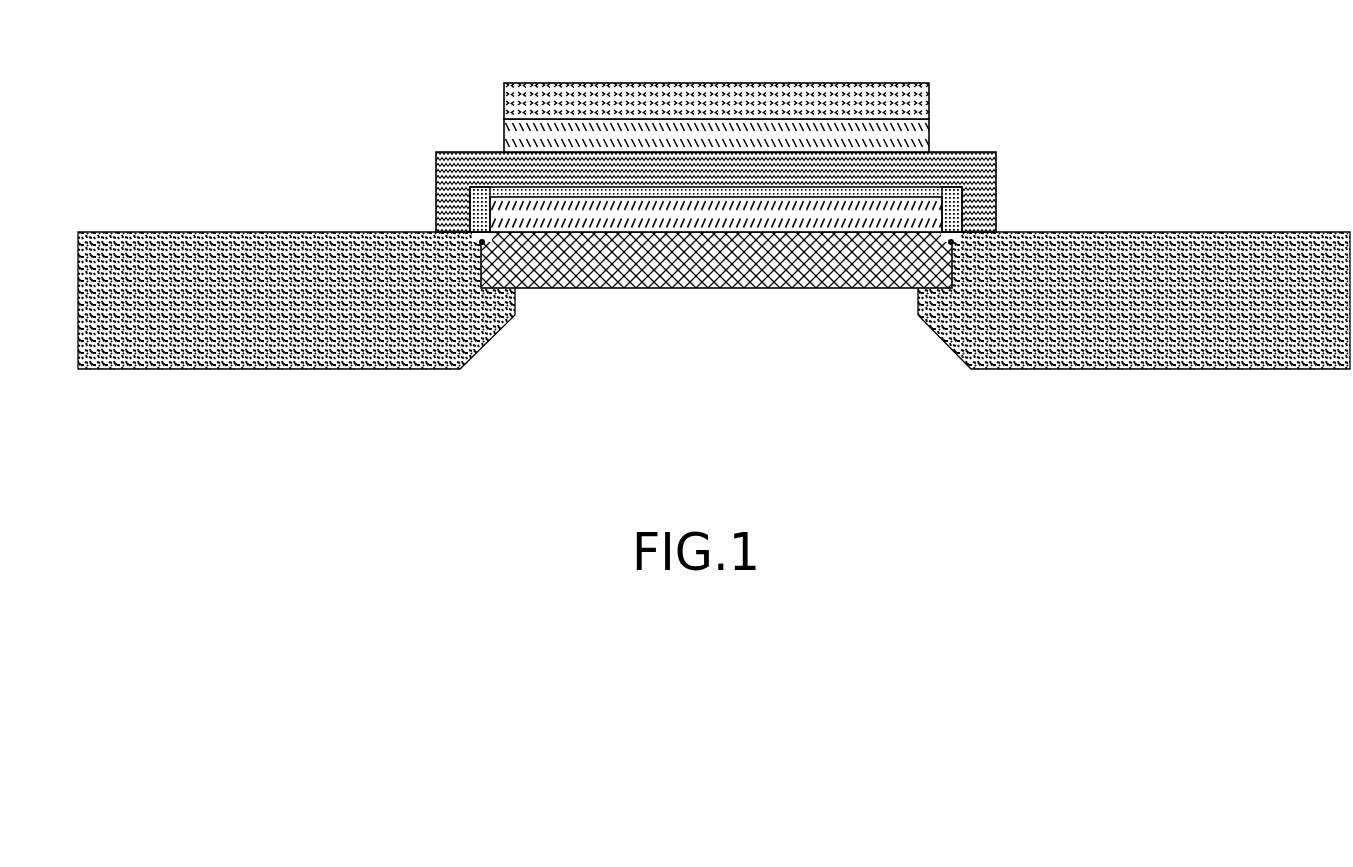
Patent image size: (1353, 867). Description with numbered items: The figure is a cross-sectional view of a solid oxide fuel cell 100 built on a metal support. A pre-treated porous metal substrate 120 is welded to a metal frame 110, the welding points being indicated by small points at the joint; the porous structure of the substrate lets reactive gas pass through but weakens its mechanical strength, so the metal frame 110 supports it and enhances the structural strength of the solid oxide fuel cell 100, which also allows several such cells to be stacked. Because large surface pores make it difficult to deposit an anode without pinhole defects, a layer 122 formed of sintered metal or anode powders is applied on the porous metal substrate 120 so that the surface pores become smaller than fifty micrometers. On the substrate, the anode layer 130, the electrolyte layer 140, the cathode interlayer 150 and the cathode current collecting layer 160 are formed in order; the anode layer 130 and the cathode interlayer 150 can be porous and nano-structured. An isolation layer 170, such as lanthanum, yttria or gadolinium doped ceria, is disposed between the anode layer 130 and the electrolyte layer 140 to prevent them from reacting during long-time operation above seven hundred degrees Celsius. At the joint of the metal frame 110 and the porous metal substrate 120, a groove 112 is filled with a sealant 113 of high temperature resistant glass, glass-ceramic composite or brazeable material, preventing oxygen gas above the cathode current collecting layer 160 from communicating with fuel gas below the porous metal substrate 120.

The solid oxide fuel cell 100 is at (1326, 568).
The metal frame 110 is at (258, 325).
The groove 112 is at (483, 230).
The sealant 113 is at (463, 233).
The pre-treated porous metal substrate 120 is at (610, 265).
The layer formed of sintered powders 122 is at (710, 238).
The anode layer 130 is at (582, 218).
The electrolyte layer 140 is at (645, 177).
The cathode interlayer 150 is at (704, 135).
The cathode current collecting layer 160 is at (750, 107).
The isolation layer 170 is at (818, 190).